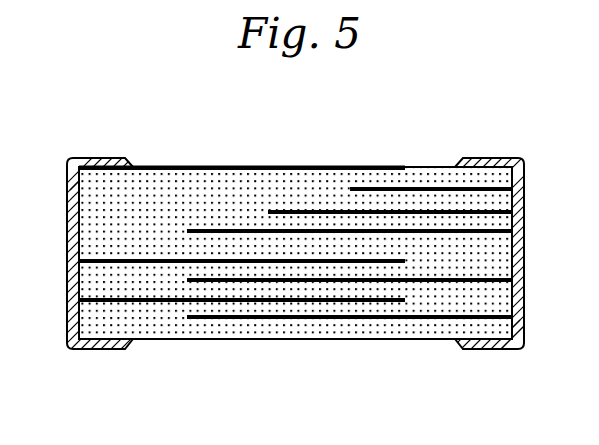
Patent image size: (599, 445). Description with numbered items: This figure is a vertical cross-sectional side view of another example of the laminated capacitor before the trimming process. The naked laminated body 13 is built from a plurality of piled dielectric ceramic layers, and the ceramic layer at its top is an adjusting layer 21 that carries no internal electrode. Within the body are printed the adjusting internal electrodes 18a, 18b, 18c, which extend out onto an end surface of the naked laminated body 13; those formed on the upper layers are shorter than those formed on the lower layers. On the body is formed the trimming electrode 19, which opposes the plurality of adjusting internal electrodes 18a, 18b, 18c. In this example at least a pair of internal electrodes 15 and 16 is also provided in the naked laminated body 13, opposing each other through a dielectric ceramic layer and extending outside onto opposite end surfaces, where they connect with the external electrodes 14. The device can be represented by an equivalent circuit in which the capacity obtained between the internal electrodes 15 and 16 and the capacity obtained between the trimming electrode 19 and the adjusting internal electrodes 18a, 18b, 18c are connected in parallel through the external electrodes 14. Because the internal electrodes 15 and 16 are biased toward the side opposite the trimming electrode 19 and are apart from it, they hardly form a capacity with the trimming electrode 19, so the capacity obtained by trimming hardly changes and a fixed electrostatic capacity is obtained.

The naked laminated body 13 is at (352, 328).
The external electrodes 14 is at (487, 160).
The internal electrode 15 is at (229, 320).
The internal electrode 16 is at (281, 301).
The adjusting internal electrode 18a is at (411, 188).
The adjusting internal electrode 18b is at (317, 212).
The adjusting internal electrode 18c is at (206, 232).
The trimming electrode 19 is at (247, 167).
The adjusting layer 21 is at (375, 167).